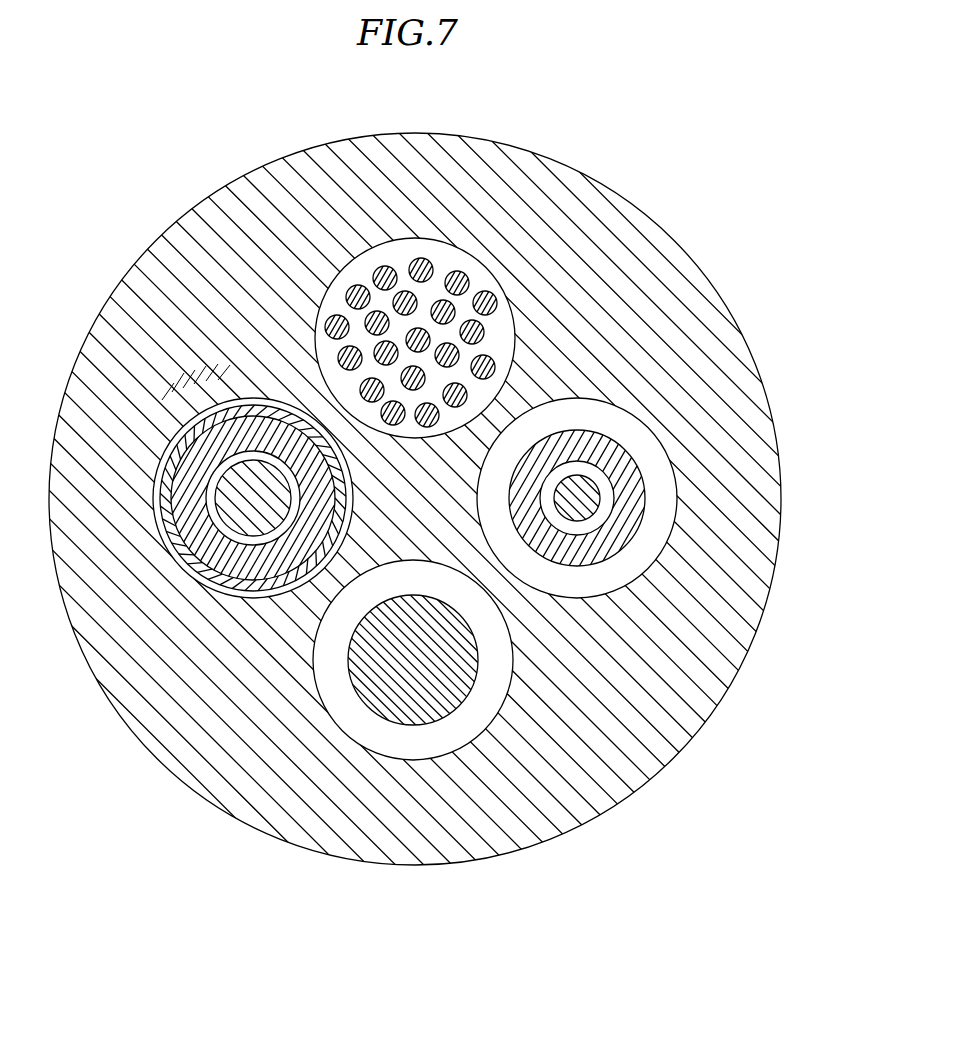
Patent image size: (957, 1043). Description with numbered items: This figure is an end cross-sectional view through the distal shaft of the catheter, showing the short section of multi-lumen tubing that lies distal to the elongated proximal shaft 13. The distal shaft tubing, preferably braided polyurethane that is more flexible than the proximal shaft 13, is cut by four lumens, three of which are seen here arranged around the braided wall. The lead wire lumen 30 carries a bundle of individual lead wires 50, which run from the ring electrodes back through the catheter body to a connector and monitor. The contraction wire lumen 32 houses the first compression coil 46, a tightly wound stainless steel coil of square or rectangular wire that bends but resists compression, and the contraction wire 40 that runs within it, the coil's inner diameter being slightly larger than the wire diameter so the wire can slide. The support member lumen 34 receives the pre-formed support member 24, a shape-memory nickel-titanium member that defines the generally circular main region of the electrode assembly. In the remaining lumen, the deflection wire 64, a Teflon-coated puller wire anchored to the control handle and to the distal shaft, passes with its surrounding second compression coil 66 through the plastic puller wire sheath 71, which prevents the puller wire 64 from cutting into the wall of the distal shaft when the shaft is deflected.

The proximal shaft 13 is at (162, 277).
The lead wire lumen 30 is at (447, 257).
The lead wires 50 is at (480, 328).
The contraction wire lumen 32 is at (625, 428).
The first compression coil 46 is at (625, 475).
The contraction wire 40 is at (580, 503).
The support member lumen 34 is at (478, 713).
The support member 24 is at (433, 700).
The puller wire sheath 71 is at (212, 413).
The deflection wire 64 is at (227, 547).
The second compression coil 66 is at (247, 520).